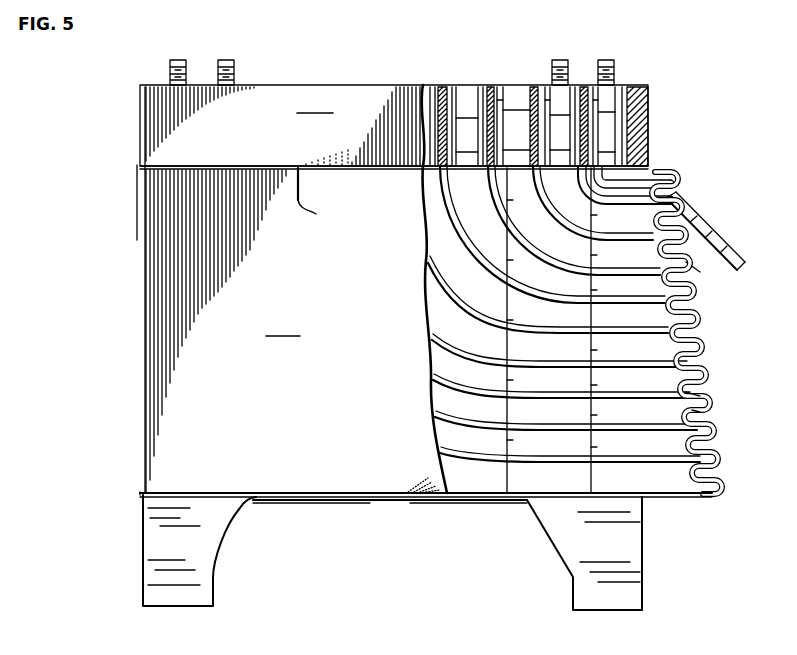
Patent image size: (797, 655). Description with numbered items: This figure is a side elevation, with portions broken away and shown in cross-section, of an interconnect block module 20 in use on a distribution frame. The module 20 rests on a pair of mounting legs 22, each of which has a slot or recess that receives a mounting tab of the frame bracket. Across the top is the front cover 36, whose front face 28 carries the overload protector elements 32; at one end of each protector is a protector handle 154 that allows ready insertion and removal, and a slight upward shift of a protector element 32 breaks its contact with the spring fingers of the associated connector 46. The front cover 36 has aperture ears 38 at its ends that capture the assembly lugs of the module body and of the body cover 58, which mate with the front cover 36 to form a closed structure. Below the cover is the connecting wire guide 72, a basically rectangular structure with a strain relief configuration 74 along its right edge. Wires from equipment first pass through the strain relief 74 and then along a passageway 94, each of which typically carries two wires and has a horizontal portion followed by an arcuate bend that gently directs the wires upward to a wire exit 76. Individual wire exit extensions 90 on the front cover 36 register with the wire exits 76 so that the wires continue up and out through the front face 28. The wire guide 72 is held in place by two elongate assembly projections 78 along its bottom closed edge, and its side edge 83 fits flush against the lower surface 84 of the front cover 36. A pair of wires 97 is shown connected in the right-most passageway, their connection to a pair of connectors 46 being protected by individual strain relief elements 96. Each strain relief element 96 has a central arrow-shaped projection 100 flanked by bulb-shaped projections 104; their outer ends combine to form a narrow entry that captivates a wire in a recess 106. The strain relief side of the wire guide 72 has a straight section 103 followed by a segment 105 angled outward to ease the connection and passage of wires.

The interconnect block module 20 is at (421, 66).
The mounting legs 22 is at (540, 543).
The front face 28 is at (327, 84).
The overload protector element 32 is at (178, 58).
The front cover 36 is at (315, 102).
The aperture ears 38 is at (138, 208).
The connector 46 is at (600, 123).
The body cover 58 is at (643, 536).
The connecting wire guide 72 is at (223, 331).
The strain relief configuration 74 is at (718, 506).
The wire exits 76 is at (527, 195).
The assembly projections 78 is at (392, 500).
The side edge 83 is at (316, 214).
The lower surface 84 is at (297, 167).
The wire exit extensions 90 is at (514, 96).
The passageway 94 is at (672, 316).
The strain relief elements 96 is at (700, 148).
The wires 97 is at (703, 230).
The arrow-shaped projection 100 is at (672, 186).
The straight section 103 is at (690, 267).
The bulb-shaped projection 104 is at (672, 202).
The angled segment 105 is at (702, 406).
The recess 106 is at (690, 392).
The protector handle 154 is at (224, 60).